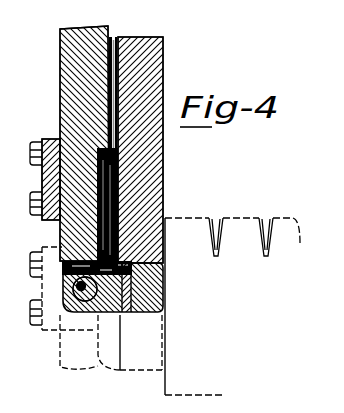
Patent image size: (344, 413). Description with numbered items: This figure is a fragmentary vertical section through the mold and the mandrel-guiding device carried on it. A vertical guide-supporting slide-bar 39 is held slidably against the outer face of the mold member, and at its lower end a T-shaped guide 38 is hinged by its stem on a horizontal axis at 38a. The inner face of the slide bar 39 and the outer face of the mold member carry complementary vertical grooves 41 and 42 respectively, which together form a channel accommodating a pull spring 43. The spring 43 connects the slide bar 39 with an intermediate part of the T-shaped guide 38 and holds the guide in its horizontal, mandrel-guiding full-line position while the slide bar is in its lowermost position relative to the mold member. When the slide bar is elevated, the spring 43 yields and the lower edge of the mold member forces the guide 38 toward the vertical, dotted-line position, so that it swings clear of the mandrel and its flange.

The T-shaped guide 38 is at (142, 300).
The horizontal hinge axis 38a is at (80, 296).
The guide-supporting slide-bar 39 is at (82, 69).
The vertical groove 41 is at (100, 218).
The vertical groove 42 is at (124, 200).
The pull spring 43 is at (124, 164).